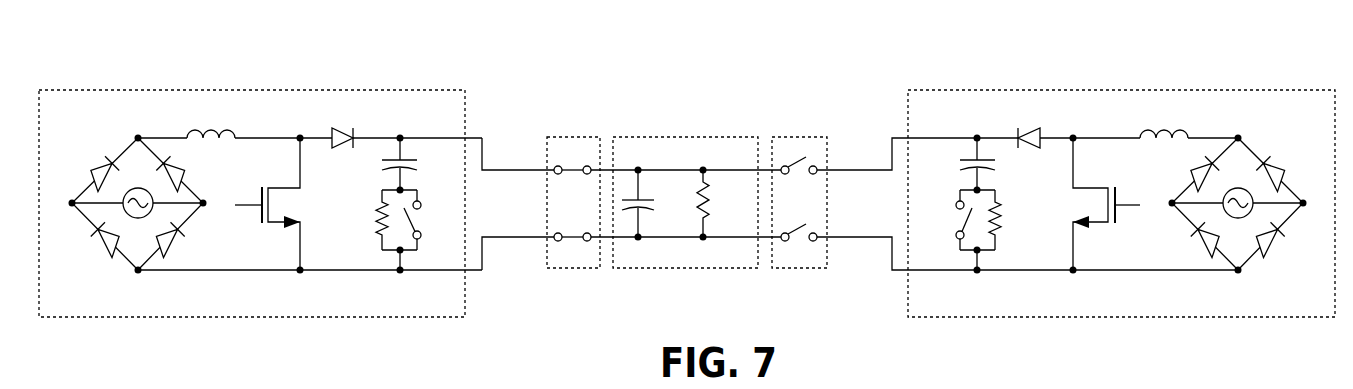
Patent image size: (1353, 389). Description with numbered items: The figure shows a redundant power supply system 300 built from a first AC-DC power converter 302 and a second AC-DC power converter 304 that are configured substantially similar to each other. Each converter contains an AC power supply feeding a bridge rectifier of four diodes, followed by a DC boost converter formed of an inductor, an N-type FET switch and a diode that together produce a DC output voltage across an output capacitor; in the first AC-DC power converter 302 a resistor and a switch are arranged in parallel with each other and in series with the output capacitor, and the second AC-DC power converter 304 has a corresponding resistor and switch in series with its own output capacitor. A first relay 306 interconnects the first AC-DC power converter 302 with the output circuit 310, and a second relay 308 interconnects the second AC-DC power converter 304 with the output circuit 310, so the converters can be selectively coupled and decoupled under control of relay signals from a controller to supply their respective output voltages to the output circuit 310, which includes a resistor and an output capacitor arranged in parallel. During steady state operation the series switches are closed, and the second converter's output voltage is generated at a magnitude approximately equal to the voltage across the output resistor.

The redundant power supply system 300 is at (142, 54).
The first AC-DC power converter 302 is at (268, 90).
The second AC-DC power converter 304 is at (1162, 90).
The first relay 306 is at (568, 268).
The second relay 308 is at (802, 268).
The output circuit 310 is at (700, 137).